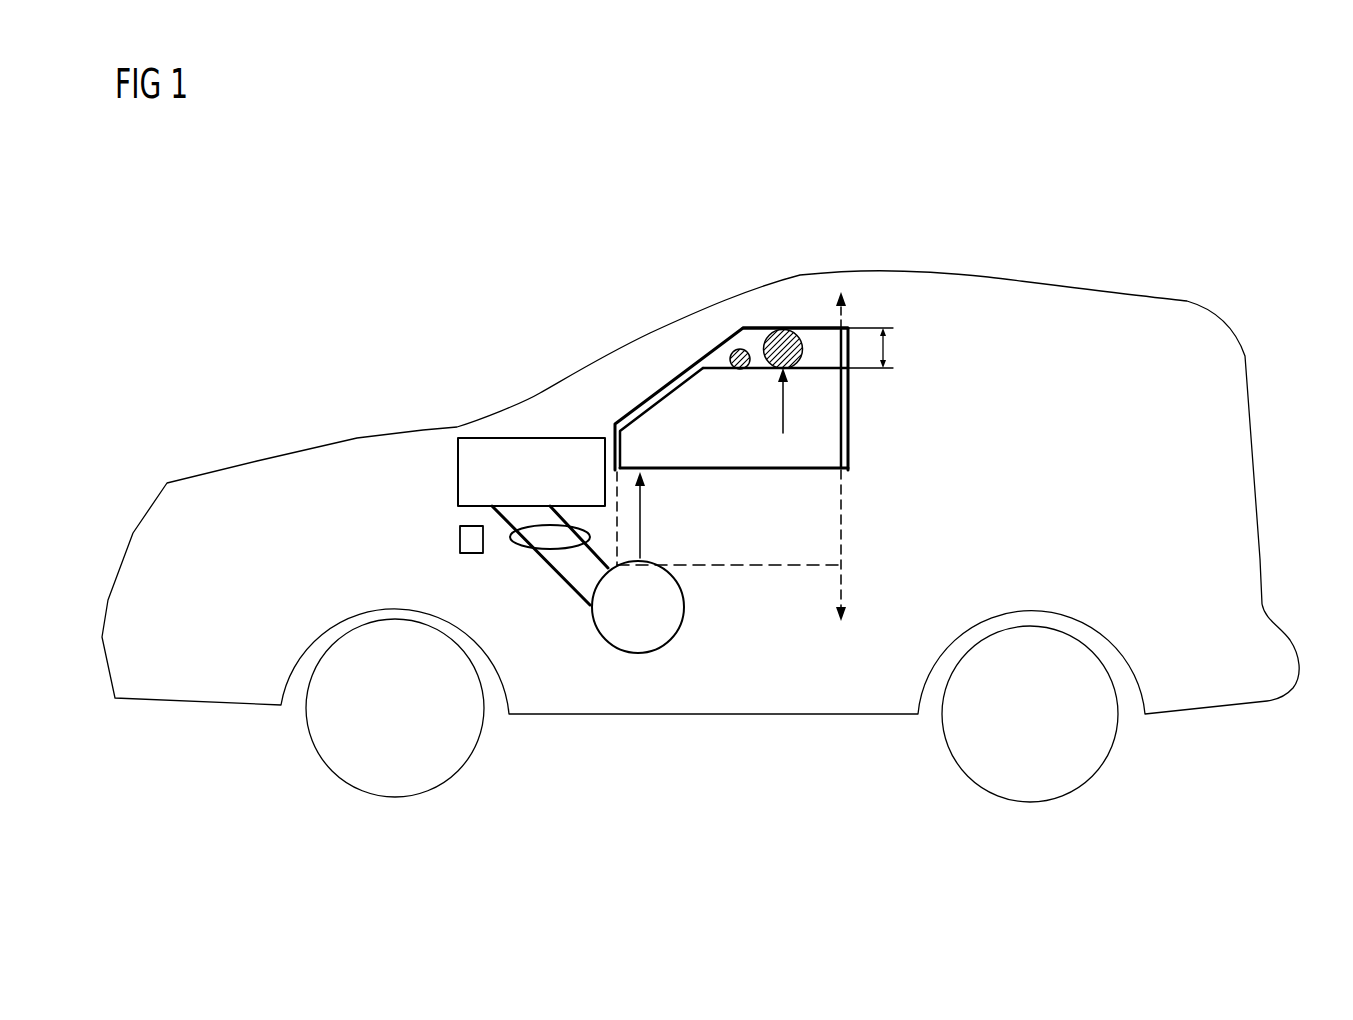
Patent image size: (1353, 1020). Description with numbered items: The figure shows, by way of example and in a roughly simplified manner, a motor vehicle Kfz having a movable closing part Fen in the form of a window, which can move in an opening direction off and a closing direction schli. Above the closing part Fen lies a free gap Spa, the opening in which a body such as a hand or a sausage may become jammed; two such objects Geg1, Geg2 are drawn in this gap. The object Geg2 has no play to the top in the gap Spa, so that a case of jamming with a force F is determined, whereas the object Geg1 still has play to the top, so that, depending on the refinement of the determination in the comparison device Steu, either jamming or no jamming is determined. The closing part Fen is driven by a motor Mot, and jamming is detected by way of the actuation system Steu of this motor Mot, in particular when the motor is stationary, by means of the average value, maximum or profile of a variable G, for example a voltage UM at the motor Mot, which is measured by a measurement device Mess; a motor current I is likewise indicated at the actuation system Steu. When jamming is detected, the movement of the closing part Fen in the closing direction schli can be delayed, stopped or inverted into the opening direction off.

The motor vehicle Kfz is at (1070, 242).
The closing part Fen is at (921, 370).
The gap Spa is at (905, 348).
The object Geg1 is at (739, 350).
The object Geg2 is at (780, 330).
The opening direction off is at (857, 310).
The closing direction schli is at (755, 545).
The force F is at (718, 463).
The actuation system Steu is at (533, 437).
The variable G is at (488, 519).
The motor current I is at (587, 519).
The voltage at the motor UM is at (585, 558).
The measurement device Mess is at (521, 549).
The motor Mot is at (637, 653).